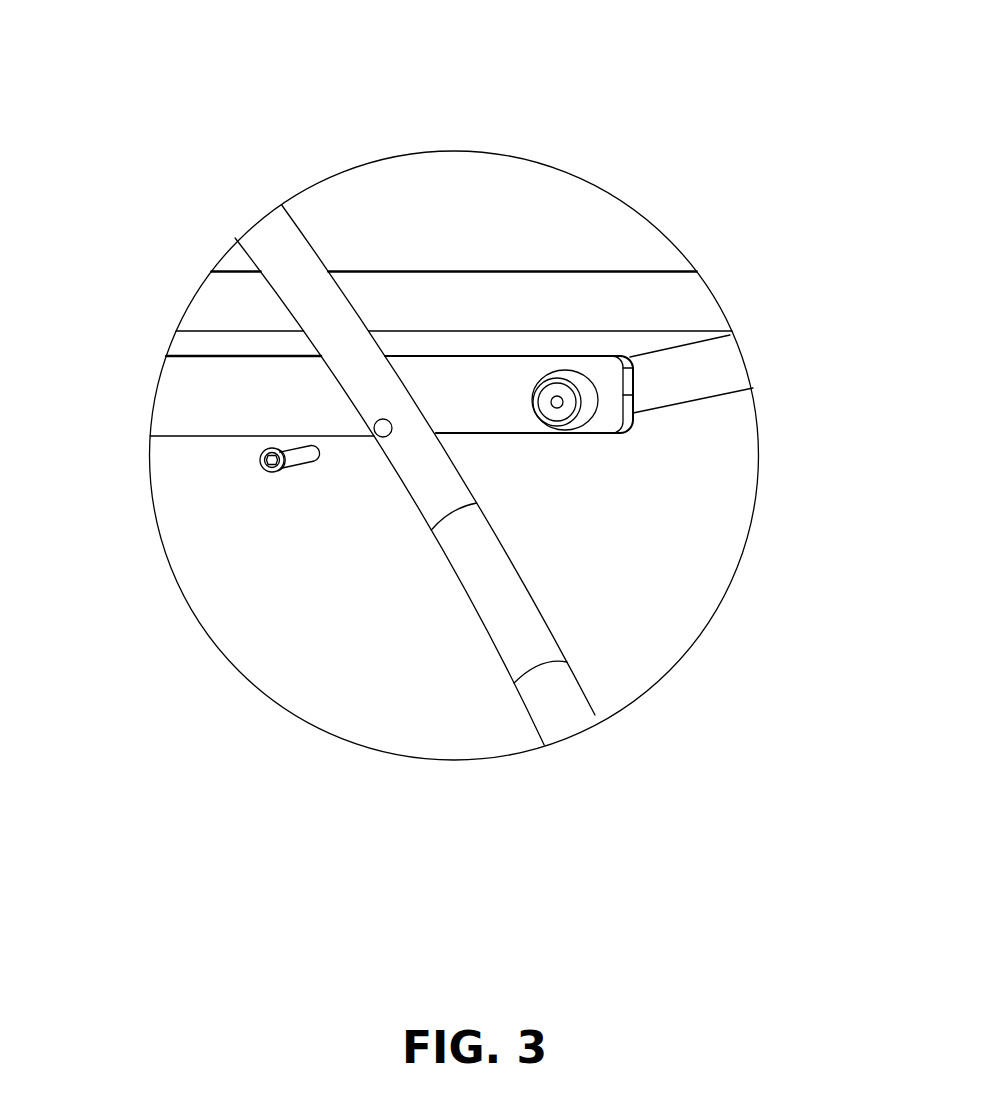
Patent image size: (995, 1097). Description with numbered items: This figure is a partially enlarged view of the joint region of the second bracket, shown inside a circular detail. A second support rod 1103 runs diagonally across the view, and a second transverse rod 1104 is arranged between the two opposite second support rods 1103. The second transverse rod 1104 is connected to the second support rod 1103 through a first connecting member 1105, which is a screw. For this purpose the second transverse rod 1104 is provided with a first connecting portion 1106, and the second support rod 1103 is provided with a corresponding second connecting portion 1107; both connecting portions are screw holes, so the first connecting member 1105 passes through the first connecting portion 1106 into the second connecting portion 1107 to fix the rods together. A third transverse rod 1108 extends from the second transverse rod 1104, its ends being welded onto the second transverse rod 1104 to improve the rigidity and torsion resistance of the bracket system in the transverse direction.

The second support rod 1103 is at (298, 297).
The second transverse rod 1104 is at (687, 373).
The first connecting member 1105 is at (272, 472).
The first connecting portion 1106 is at (385, 438).
The second connecting portion 1107 is at (558, 403).
The third transverse rod 1108 is at (475, 387).